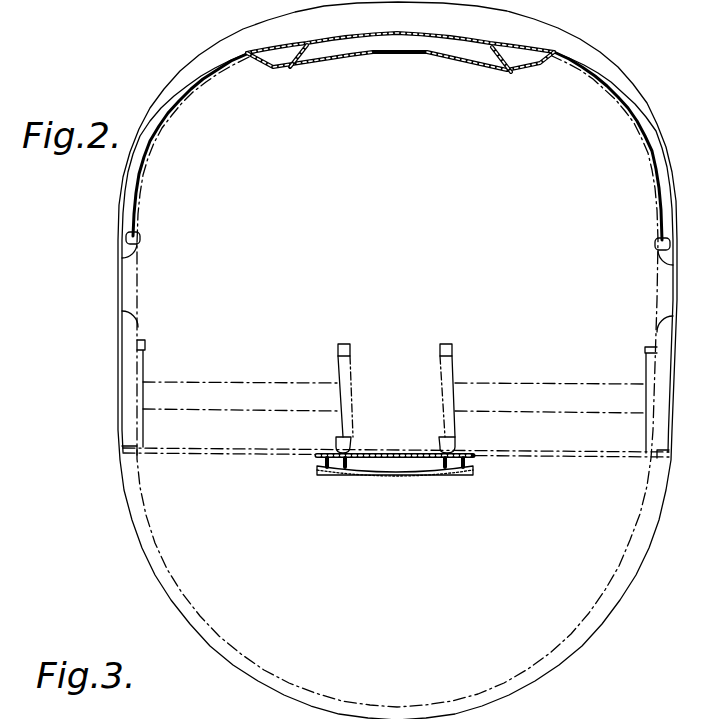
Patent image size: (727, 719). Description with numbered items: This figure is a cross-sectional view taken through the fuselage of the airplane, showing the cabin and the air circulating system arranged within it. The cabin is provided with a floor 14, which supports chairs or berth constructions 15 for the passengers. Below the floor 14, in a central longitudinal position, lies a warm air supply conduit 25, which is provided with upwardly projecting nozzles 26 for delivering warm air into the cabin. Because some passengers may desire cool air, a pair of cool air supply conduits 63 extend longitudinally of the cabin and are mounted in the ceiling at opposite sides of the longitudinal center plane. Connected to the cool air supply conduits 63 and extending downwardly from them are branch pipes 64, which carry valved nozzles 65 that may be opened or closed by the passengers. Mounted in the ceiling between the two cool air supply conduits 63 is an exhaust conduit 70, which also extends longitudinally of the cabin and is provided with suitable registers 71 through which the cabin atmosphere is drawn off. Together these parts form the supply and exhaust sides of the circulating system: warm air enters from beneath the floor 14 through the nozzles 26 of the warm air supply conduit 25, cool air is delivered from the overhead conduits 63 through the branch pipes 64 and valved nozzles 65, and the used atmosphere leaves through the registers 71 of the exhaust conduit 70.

The floor 14 is at (224, 453).
The chairs or berth constructions 15 is at (228, 386).
The warm air supply conduit 25 is at (366, 477).
The nozzles 26 is at (440, 443).
The cool air supply conduits 63 is at (280, 67).
The branch pipes 64 is at (165, 122).
The valved nozzles 65 is at (141, 239).
The exhaust conduit 70 is at (338, 49).
The registers 71 is at (414, 56).